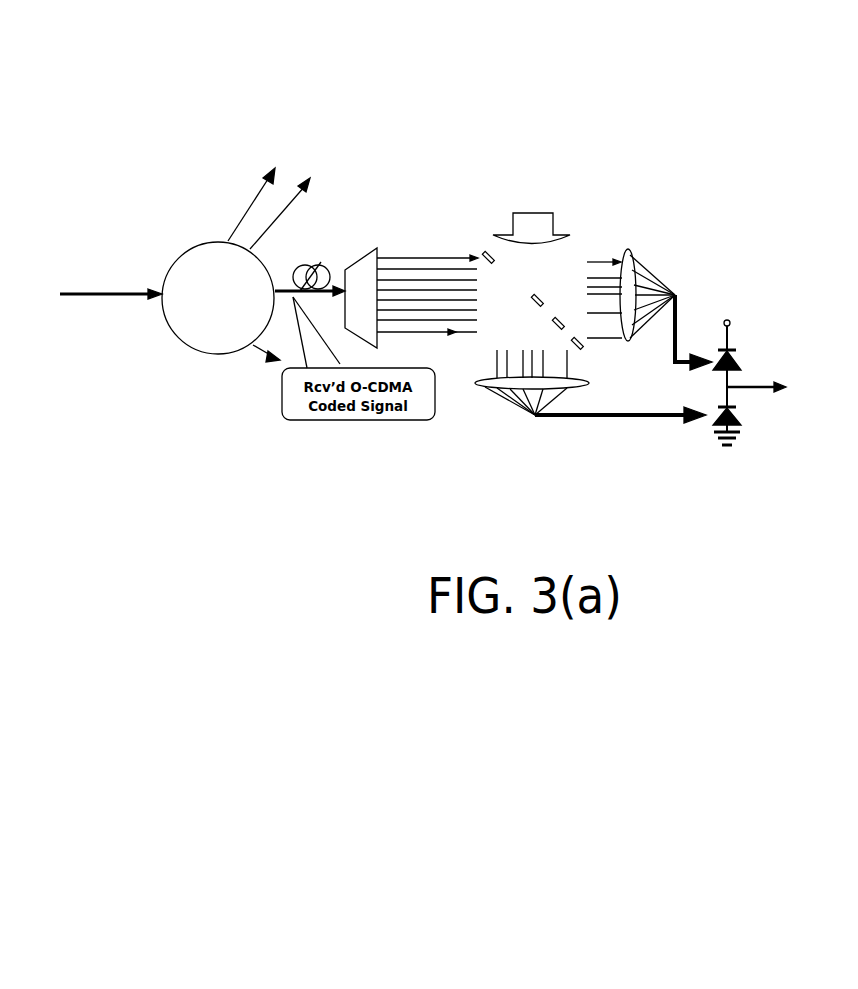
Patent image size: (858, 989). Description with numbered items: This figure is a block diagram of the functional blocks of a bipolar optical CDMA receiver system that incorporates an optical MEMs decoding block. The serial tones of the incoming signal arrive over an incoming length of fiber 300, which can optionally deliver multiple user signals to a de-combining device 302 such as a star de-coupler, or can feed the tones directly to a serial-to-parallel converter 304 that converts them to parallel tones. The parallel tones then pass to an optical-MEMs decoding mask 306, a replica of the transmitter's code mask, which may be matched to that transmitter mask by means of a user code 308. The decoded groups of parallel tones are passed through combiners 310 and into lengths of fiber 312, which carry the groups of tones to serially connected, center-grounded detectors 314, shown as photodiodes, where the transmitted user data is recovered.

The length of fiber 300 is at (80, 295).
The de-combining device 302 is at (217, 357).
The serial-to-parallel converter 304 is at (377, 250).
The optical-MEMs decoding mask 306 is at (577, 253).
The user code 308 is at (497, 167).
The combiners 310 is at (633, 260).
The lengths of fiber 312 is at (678, 300).
The detectors 314 is at (737, 348).